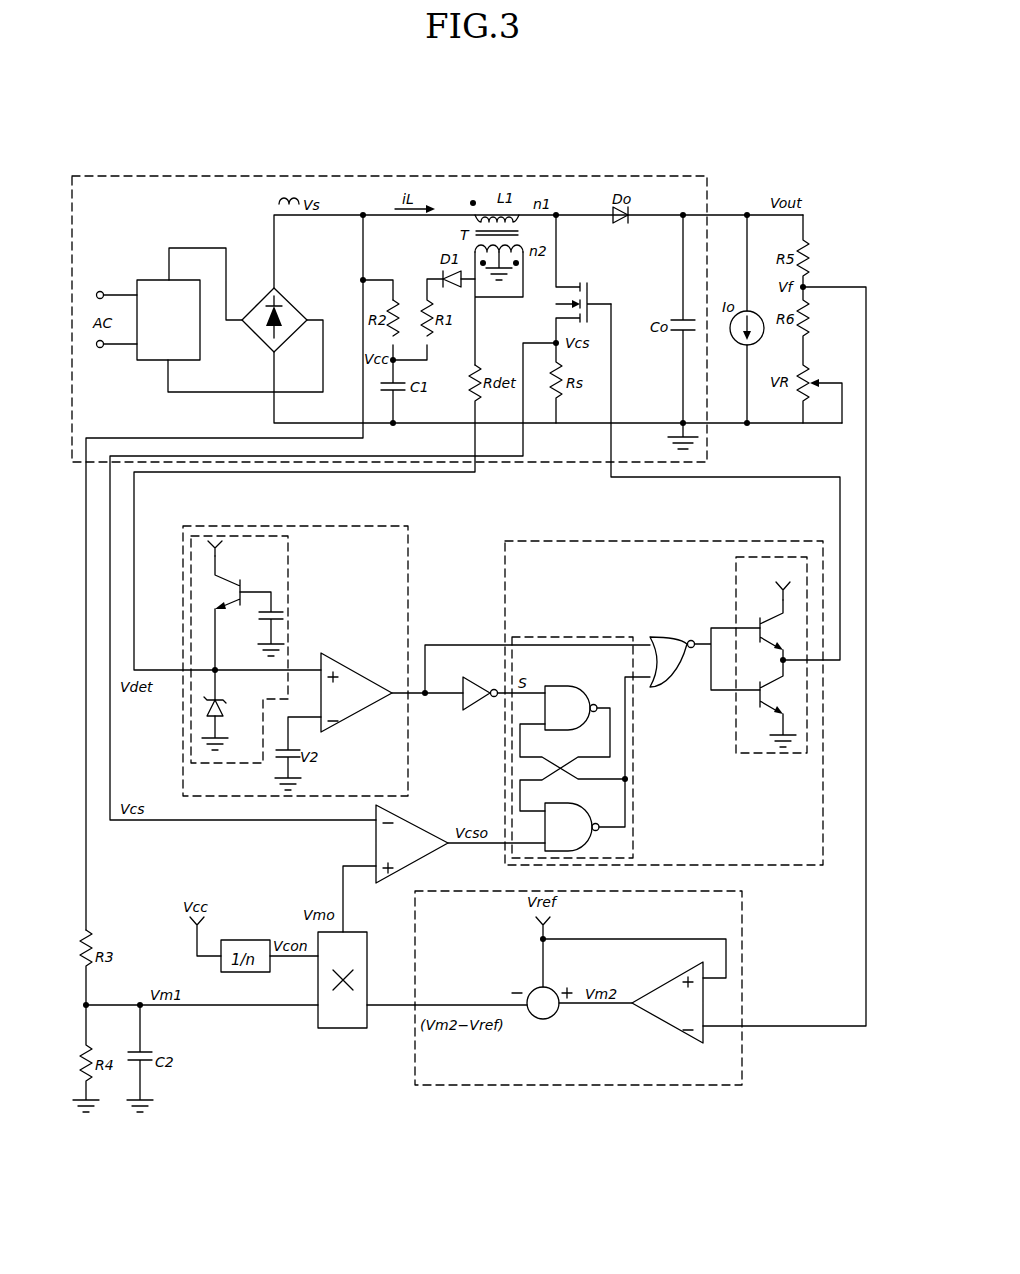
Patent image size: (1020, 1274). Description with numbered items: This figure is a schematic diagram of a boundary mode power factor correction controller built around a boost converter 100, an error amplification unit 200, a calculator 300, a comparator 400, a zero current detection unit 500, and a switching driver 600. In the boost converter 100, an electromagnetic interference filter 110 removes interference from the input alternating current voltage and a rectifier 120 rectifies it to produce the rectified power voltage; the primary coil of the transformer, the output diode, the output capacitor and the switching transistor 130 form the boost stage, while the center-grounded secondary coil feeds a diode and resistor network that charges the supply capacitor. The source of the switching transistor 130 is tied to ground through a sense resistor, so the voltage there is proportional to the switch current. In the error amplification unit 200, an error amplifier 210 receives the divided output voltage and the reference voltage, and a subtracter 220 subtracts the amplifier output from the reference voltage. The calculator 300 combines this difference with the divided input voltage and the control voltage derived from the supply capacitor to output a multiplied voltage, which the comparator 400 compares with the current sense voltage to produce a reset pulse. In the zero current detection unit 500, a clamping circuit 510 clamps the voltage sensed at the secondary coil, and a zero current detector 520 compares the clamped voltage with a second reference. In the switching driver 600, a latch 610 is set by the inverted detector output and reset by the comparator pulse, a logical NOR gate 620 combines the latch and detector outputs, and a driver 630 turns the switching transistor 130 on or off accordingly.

The boost converter 100 is at (388, 175).
The Electro Magnetic Interface (EMI) filter 110 is at (149, 280).
The rectifier 120 is at (298, 299).
The switching MOSFET 130 is at (597, 301).
The error amplification unit 200 is at (742, 939).
The error amplifier 210 is at (668, 1027).
The subtracter 220 is at (543, 1020).
The calculator 300 is at (343, 1030).
The comparator 400 is at (376, 849).
The zero current detection unit 500 is at (408, 576).
The clamping circuit 510 is at (300, 568).
The zero current detector 520 is at (352, 720).
The switching driver 600 is at (561, 541).
The R-S latch 610 is at (568, 637).
The logical NOR gate 620 is at (668, 638).
The driver 630 is at (768, 755).